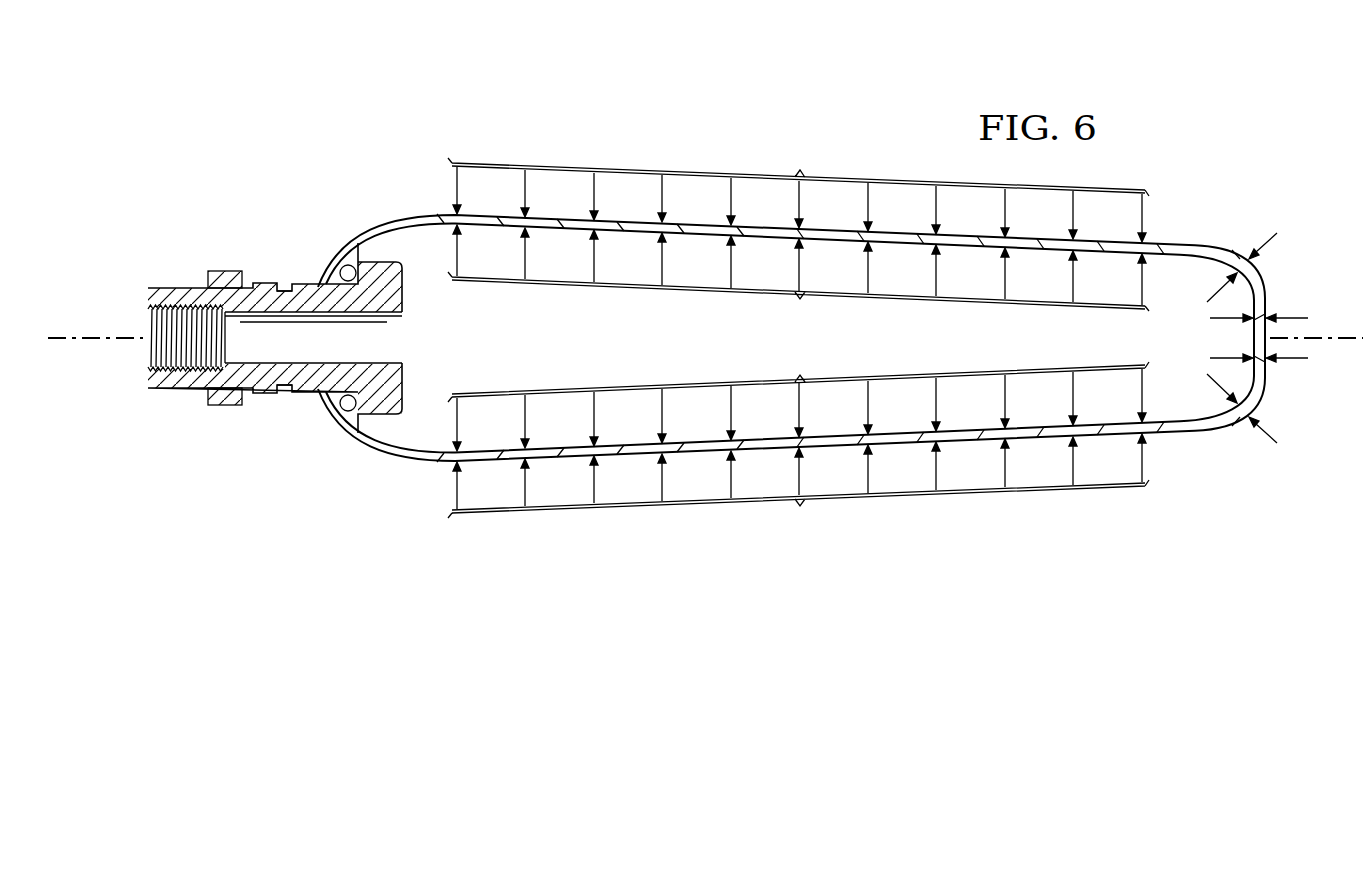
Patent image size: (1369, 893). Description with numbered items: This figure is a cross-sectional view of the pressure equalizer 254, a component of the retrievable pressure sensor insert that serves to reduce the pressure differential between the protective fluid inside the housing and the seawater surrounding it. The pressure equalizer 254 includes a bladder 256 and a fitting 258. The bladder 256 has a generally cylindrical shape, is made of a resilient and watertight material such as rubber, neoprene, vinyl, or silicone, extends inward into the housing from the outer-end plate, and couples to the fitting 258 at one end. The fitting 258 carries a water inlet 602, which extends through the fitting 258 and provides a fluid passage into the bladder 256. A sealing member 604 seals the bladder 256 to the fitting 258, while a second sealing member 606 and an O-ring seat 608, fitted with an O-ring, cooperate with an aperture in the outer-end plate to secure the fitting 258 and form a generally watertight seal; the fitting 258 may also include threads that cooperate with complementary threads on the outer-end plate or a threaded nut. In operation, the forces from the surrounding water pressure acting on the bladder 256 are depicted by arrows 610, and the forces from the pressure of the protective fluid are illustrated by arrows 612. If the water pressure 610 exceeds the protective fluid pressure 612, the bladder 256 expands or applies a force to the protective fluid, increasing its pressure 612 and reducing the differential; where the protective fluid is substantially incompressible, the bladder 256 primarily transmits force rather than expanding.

The pressure equalizer 254 is at (617, 132).
The bladder 256 is at (410, 464).
The fitting 258 is at (235, 324).
The water inlet 602 is at (144, 352).
The sealing member 604 is at (349, 266).
The sealing member 606 is at (221, 270).
The O-ring seat 608 is at (290, 393).
The arrows depicting water pressure forces 610 is at (798, 338).
The arrows depicting protective fluid pressure forces 612 is at (798, 340).